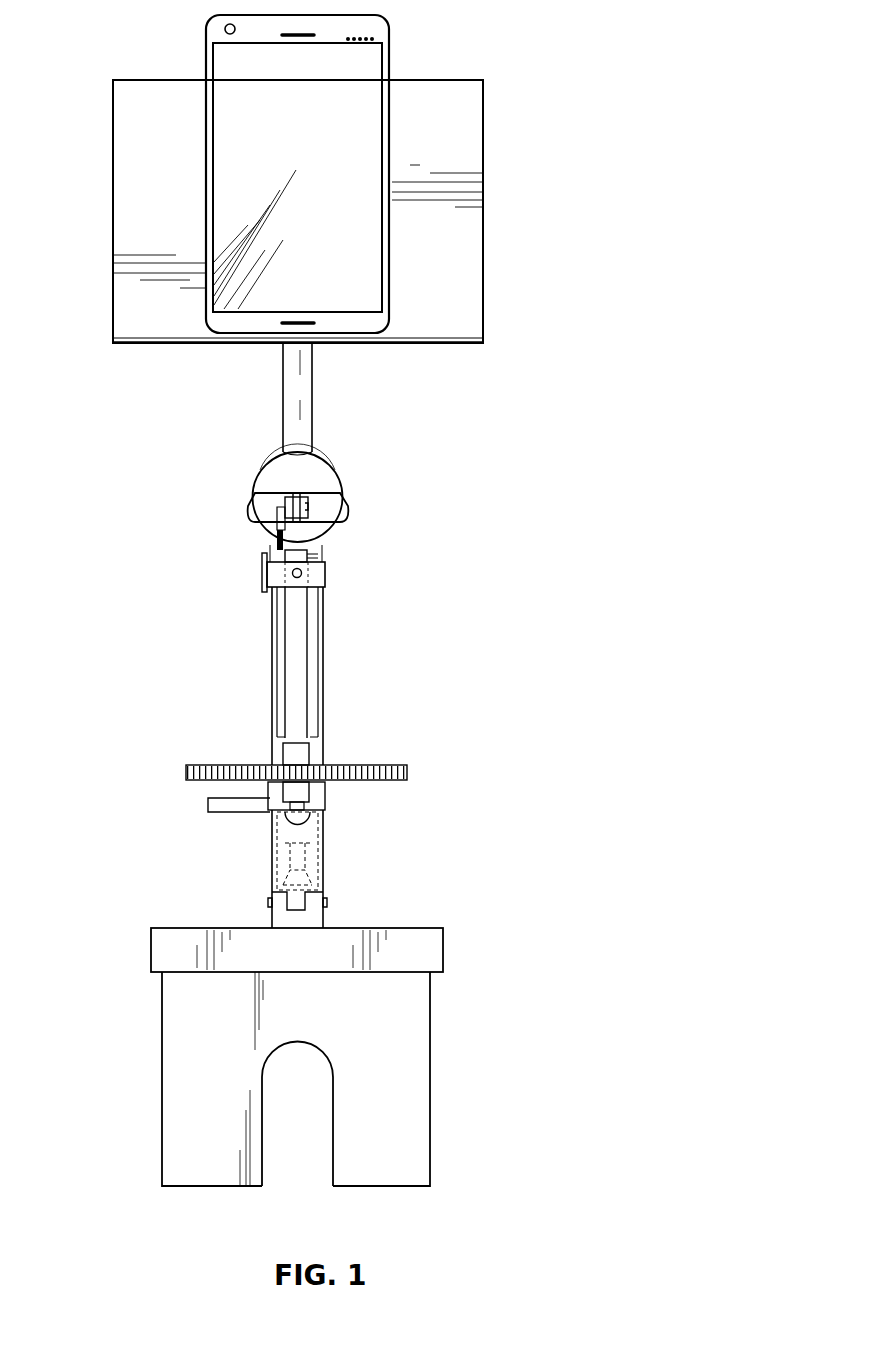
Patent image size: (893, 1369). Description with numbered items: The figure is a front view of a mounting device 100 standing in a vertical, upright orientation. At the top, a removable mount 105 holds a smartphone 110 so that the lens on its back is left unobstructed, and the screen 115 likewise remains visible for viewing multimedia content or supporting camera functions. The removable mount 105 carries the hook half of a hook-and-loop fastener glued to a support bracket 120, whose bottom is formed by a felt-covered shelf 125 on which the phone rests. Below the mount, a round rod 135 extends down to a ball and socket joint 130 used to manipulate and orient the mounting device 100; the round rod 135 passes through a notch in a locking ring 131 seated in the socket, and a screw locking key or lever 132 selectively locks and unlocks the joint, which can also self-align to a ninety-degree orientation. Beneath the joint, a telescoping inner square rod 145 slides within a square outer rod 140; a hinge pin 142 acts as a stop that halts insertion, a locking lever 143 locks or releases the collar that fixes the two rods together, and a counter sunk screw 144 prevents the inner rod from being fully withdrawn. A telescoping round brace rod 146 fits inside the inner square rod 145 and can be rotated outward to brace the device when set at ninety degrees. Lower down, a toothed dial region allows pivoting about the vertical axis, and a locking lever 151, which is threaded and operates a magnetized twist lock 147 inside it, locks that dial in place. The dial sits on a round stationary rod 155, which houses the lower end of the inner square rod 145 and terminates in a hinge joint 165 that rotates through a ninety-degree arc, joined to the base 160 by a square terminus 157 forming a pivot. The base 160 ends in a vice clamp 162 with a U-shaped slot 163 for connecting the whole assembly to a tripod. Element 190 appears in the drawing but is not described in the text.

The mounting device 100 is at (453, 1137).
The removable mount 105 is at (113, 213).
The smartphone 110 is at (395, 40).
The screen 115 is at (392, 68).
The support bracket 120 is at (483, 169).
The felt-covered shelf 125 is at (483, 342).
The ball and socket joint 130 is at (338, 465).
The locking ring 131 is at (248, 505).
The screw locking key or lever 132 is at (352, 517).
The round rod 135 is at (312, 395).
The square outer rod 140 is at (323, 688).
The hinge pin 142 is at (328, 568).
The locking lever 143 is at (262, 575).
The counter sunk screw 144 is at (297, 578).
The telescoping inner square rod 145 is at (325, 545).
The telescoping round brace rod 146 is at (318, 722).
The magnetized twist lock 147 is at (277, 792).
The locking lever 151 is at (325, 790).
The round stationary rod 155 is at (300, 845).
The square terminus 157 is at (297, 905).
The base 160 is at (443, 950).
The vice clamp 162 is at (430, 1040).
The U-shaped slot 163 is at (305, 1143).
The hinge joint 165 is at (272, 915).
The gear 190 is at (407, 770).